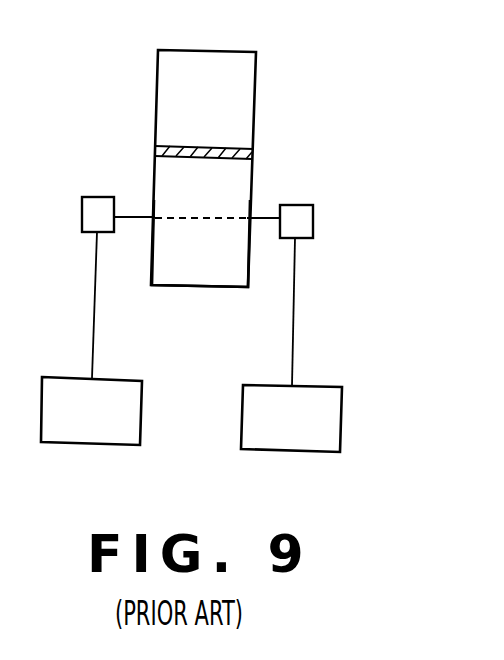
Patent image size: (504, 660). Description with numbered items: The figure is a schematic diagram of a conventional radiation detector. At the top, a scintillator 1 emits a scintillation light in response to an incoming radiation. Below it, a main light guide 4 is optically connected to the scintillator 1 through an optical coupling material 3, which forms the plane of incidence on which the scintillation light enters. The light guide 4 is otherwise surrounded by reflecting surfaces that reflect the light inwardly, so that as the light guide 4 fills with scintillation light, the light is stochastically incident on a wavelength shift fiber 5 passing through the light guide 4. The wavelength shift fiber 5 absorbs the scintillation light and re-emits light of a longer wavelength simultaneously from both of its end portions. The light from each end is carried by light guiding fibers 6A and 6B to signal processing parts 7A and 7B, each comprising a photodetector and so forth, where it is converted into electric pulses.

The scintillator 1 is at (228, 82).
The optical coupling material 3 is at (155, 148).
The light guide 4 is at (247, 197).
The wavelength shift fiber 5 is at (143, 215).
The light guiding fiber 6A is at (93, 358).
The light guiding fiber 6B is at (293, 348).
The signal processing part 7A is at (115, 422).
The signal processing part 7B is at (310, 412).